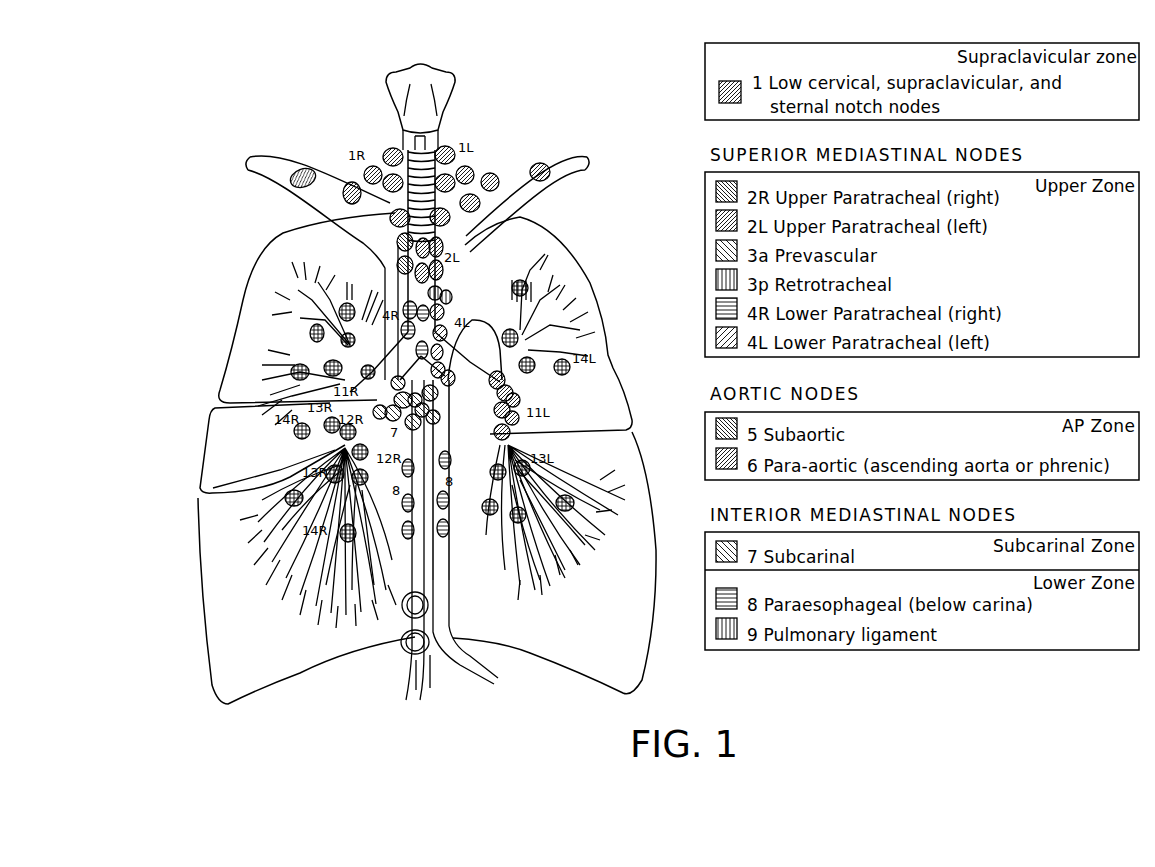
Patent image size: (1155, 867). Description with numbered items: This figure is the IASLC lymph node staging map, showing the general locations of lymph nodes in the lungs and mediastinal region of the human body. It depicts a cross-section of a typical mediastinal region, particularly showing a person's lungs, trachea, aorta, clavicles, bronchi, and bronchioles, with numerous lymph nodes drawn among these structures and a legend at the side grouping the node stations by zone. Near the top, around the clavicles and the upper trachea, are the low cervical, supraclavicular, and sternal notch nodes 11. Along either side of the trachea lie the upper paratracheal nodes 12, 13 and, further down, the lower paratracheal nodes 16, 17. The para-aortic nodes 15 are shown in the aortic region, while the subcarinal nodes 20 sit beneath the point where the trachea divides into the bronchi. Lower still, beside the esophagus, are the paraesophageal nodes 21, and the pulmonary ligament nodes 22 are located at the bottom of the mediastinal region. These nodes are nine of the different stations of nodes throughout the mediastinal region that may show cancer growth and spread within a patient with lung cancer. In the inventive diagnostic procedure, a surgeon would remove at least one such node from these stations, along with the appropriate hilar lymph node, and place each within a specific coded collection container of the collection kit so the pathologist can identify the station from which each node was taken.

The low cervical, supraclavicular, and sternal notch nodes 11 is at (392, 174).
The upper paratracheal nodes 12 is at (394, 260).
The upper paratracheal nodes 13 is at (442, 268).
The para-aortic nodes 15 is at (402, 346).
The lower paratracheal nodes 16 is at (400, 302).
The lower paratracheal nodes 17 is at (450, 336).
The subcarinal nodes 20 is at (518, 420).
The paraesophageal nodes 21 is at (405, 536).
The pulmonary ligament nodes 22 is at (408, 614).